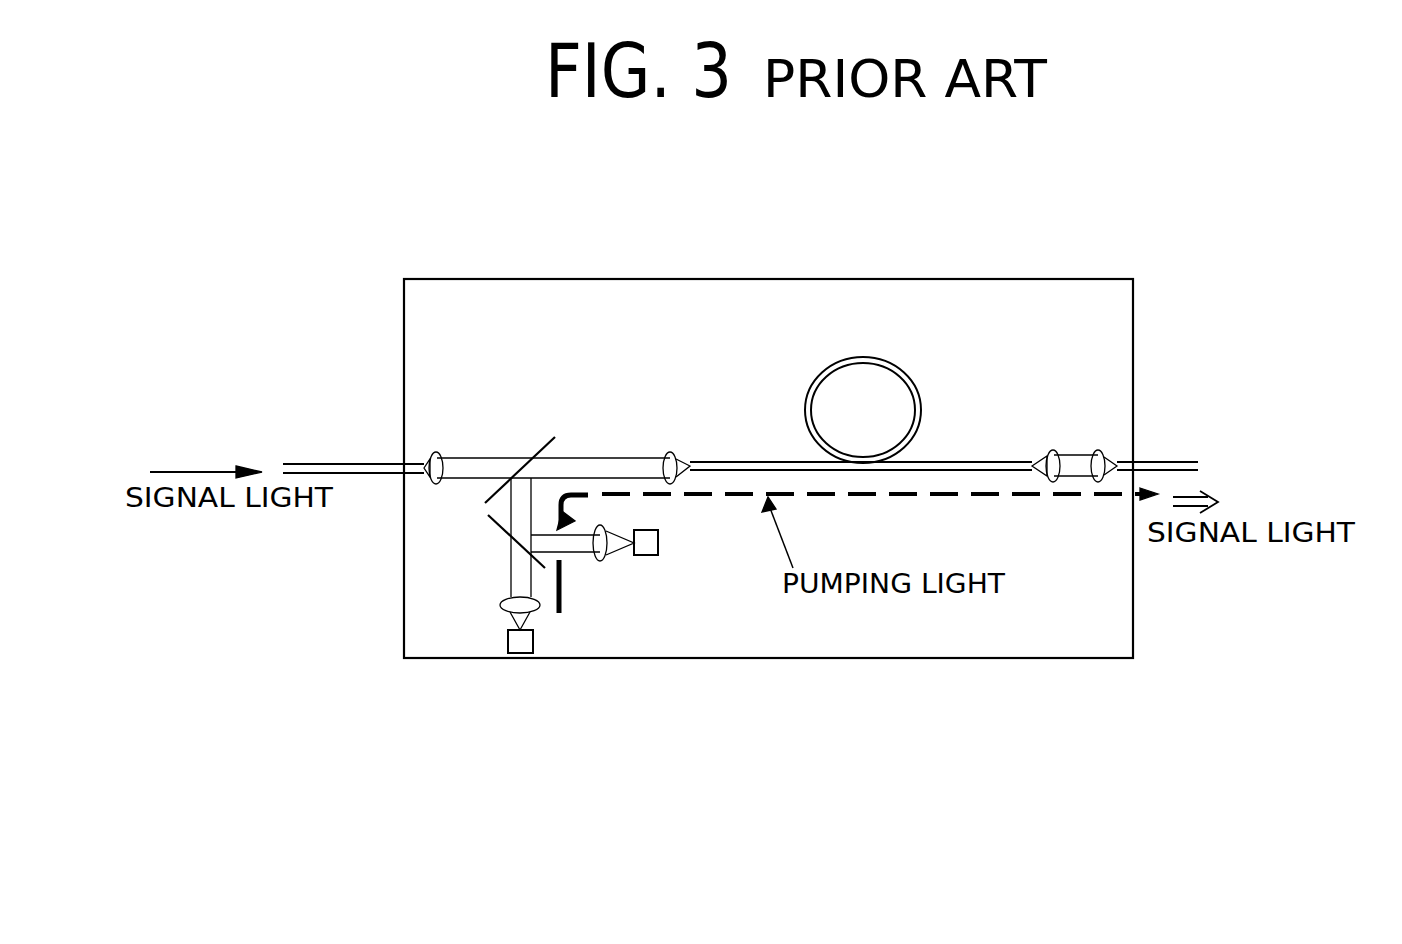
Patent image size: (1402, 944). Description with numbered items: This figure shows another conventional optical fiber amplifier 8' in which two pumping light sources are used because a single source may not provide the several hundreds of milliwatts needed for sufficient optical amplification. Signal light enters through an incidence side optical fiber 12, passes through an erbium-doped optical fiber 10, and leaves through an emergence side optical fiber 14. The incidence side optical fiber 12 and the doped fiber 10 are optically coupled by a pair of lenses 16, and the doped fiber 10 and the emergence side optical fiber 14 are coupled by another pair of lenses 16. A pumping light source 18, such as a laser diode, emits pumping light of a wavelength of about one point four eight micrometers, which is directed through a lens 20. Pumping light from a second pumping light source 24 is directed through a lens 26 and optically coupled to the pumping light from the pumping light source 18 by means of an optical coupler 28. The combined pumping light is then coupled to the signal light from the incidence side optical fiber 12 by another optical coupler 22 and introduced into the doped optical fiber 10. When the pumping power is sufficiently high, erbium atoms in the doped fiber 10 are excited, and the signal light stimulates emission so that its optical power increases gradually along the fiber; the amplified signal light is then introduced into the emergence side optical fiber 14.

The optical fiber amplifier 8' is at (768, 421).
The doped optical fiber 10 is at (967, 461).
The incidence side optical fiber 12 is at (367, 463).
The emergence side optical fiber 14 is at (1185, 461).
The lenses 16 is at (437, 451).
The pumping light source 18 is at (520, 655).
The lens 20 is at (500, 605).
The optical coupler 22 is at (547, 440).
The pumping light source 24 is at (660, 548).
The lens 26 is at (605, 561).
The optical coupler 28 is at (495, 527).